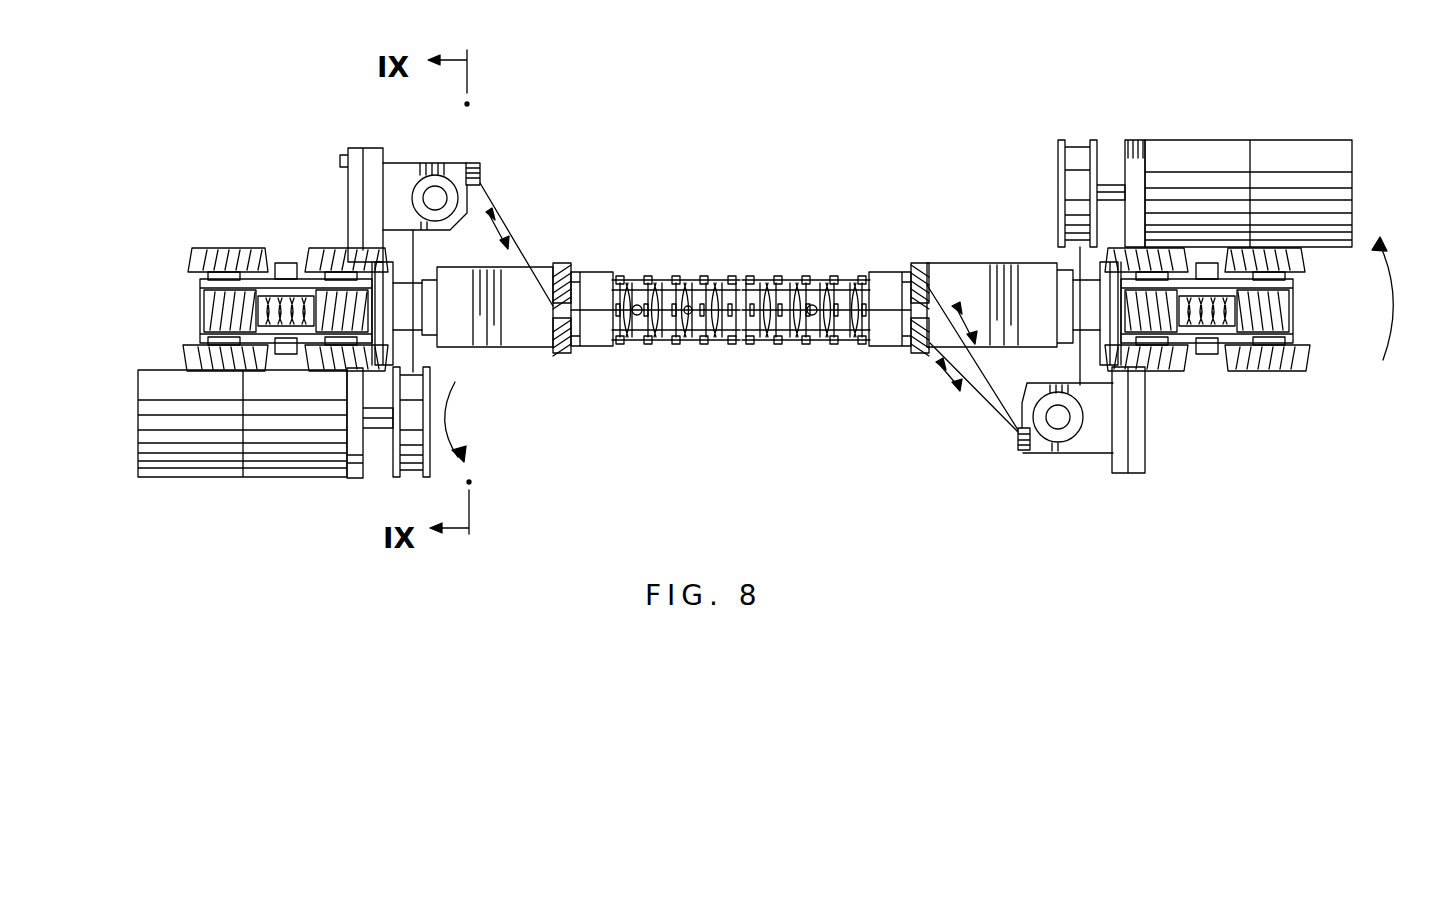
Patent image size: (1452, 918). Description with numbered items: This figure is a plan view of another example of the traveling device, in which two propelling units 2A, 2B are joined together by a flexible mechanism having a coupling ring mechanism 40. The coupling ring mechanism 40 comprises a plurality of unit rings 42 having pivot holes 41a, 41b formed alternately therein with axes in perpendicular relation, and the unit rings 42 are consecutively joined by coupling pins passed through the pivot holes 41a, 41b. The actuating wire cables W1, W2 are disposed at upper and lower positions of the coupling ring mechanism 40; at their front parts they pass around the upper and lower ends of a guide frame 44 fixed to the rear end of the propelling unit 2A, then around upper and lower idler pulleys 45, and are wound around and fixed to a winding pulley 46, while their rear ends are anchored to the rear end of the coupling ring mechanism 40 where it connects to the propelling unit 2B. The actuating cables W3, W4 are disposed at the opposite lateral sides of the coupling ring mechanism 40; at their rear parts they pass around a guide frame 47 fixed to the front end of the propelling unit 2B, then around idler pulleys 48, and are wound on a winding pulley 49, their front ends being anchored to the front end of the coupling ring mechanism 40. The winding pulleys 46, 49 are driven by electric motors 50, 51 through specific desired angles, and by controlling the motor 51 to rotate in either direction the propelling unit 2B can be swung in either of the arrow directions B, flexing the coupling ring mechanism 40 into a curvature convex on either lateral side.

The propelling unit 2A is at (284, 238).
The propelling unit 2B is at (1218, 392).
The coupling ring mechanism 40 is at (755, 237).
The pivot holes 41a is at (633, 350).
The pivot holes 41b is at (732, 268).
The unit rings 42 is at (624, 346).
The guide frame 44 is at (480, 168).
The idler pulleys 45 is at (437, 178).
The winding pulley 46 is at (432, 465).
The guide frame 47 is at (1022, 455).
The idler pulleys 48 is at (1068, 430).
The winding pulley 49 is at (1057, 162).
The electric motor 50 is at (280, 454).
The electric motor 51 is at (1283, 150).
The actuating wire cable W1 is at (512, 228).
The actuating wire cable W2 is at (516, 244).
The actuating cable W3 is at (982, 403).
The actuating cable W4 is at (935, 297).
The arrow directions B is at (1398, 298).